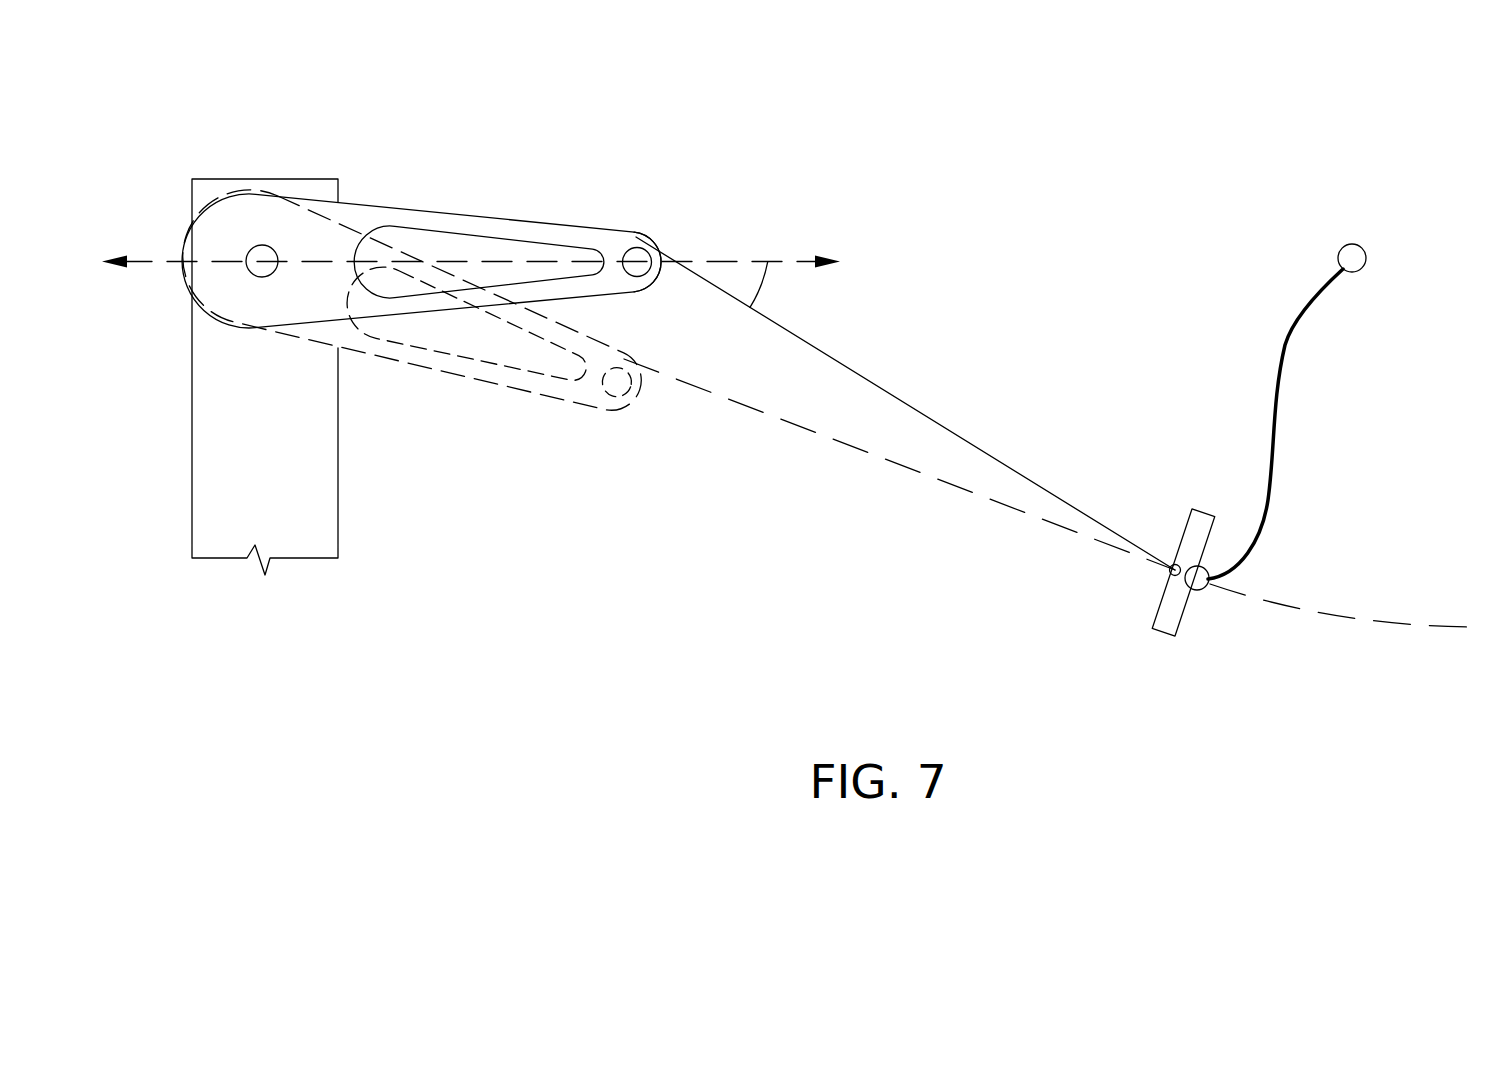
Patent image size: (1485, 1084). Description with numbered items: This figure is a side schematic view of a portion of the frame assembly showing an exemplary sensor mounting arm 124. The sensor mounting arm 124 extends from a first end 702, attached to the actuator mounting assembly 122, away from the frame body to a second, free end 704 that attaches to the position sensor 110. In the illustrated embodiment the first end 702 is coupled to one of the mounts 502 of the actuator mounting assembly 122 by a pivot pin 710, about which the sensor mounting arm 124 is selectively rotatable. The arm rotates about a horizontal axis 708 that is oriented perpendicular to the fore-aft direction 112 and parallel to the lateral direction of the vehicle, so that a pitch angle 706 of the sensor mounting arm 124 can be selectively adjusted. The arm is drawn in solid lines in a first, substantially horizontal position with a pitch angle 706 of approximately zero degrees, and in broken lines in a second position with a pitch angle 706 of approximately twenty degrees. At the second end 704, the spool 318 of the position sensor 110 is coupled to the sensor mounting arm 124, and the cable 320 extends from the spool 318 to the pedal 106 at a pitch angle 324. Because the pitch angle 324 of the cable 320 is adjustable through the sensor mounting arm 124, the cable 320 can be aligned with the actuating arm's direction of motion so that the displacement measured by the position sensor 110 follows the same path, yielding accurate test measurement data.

The pedal 106 is at (1156, 616).
The position sensor 110 is at (680, 235).
The fore-aft direction 112 is at (798, 262).
The actuator mounting assembly 122 is at (223, 324).
The sensor mounting arm 124 is at (416, 276).
The spool 318 is at (638, 278).
The cable 320 is at (907, 405).
The pitch angle 324 is at (768, 280).
The mount 502 is at (208, 422).
The first end 702 is at (260, 193).
The second end 704 is at (660, 238).
The pitch angle 706 is at (342, 290).
The horizontal axis 708 is at (256, 272).
The pivot pin 710 is at (186, 250).